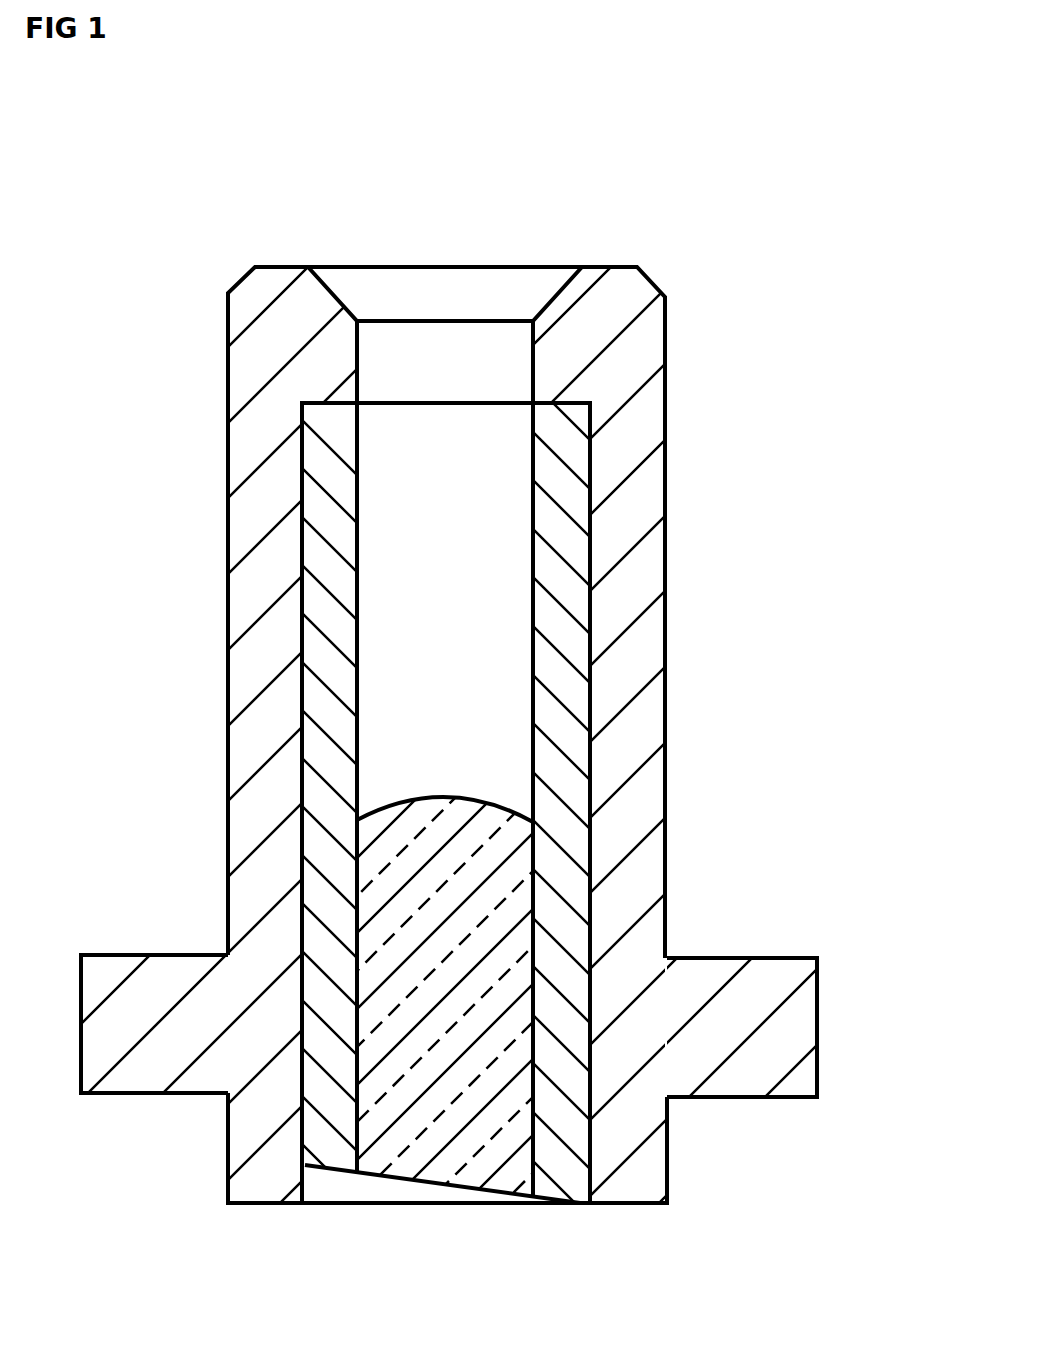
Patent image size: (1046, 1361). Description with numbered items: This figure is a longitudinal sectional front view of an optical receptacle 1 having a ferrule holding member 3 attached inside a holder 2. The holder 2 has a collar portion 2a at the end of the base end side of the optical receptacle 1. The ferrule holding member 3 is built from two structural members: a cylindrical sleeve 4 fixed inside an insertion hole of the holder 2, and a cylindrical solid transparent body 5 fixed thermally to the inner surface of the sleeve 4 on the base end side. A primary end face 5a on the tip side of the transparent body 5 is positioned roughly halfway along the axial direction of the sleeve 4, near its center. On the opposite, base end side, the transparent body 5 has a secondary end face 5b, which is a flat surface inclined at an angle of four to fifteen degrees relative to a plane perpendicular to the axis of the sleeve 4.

The optical receptacle 1 is at (721, 252).
The holder 2 is at (648, 512).
The collar portion 2a is at (793, 1025).
The ferrule holding member 3 is at (300, 543).
The cylindrical sleeve 4 is at (322, 657).
The cylindrical solid transparent body 5 is at (397, 915).
The primary end face 5a is at (433, 797).
The secondary end face 5b is at (428, 1183).